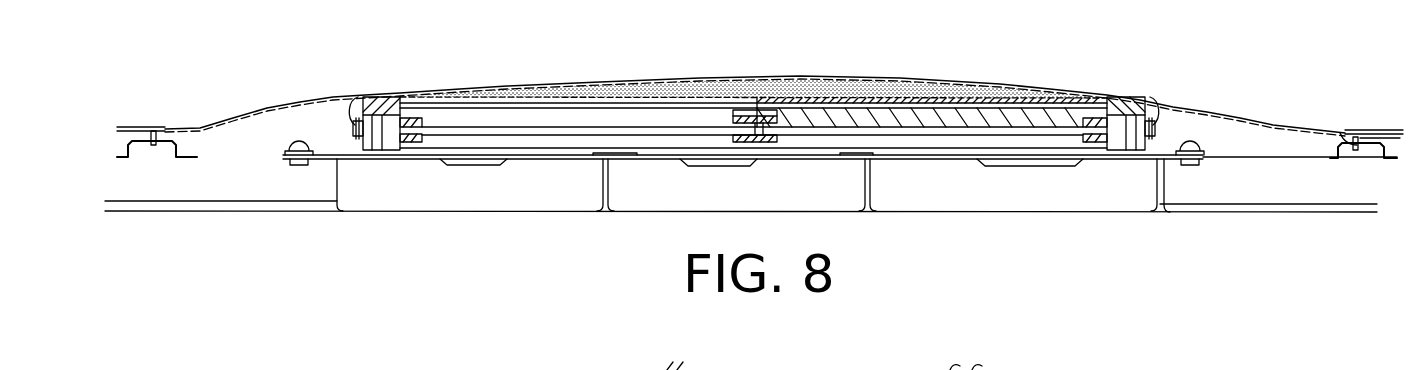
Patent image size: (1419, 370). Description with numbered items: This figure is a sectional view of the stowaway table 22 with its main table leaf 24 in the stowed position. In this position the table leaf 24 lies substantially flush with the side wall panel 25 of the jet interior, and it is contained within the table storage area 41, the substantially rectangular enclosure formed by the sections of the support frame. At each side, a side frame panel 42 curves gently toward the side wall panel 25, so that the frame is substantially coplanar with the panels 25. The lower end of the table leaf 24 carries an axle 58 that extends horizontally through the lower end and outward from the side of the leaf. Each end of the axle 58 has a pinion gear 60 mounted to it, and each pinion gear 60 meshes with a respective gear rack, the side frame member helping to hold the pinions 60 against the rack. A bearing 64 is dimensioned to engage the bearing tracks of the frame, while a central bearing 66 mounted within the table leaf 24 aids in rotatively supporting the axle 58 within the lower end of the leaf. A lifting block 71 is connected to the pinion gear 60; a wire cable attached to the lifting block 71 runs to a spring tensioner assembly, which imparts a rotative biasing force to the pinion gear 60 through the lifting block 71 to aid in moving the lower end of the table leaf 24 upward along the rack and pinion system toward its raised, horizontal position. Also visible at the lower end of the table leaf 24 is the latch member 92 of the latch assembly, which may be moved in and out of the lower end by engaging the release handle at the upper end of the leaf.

The stowaway table 22 is at (978, 64).
The main table leaf 24 is at (650, 85).
The side wall panel 25 is at (135, 128).
The table storage area 41 is at (826, 145).
The side frame panel 42 is at (253, 113).
The axle 58 is at (493, 130).
The pinion gear 60 is at (400, 117).
The bearing 64 is at (383, 97).
The central bearing 66 is at (743, 142).
The lifting block 71 is at (356, 122).
The latch member 92 is at (767, 117).